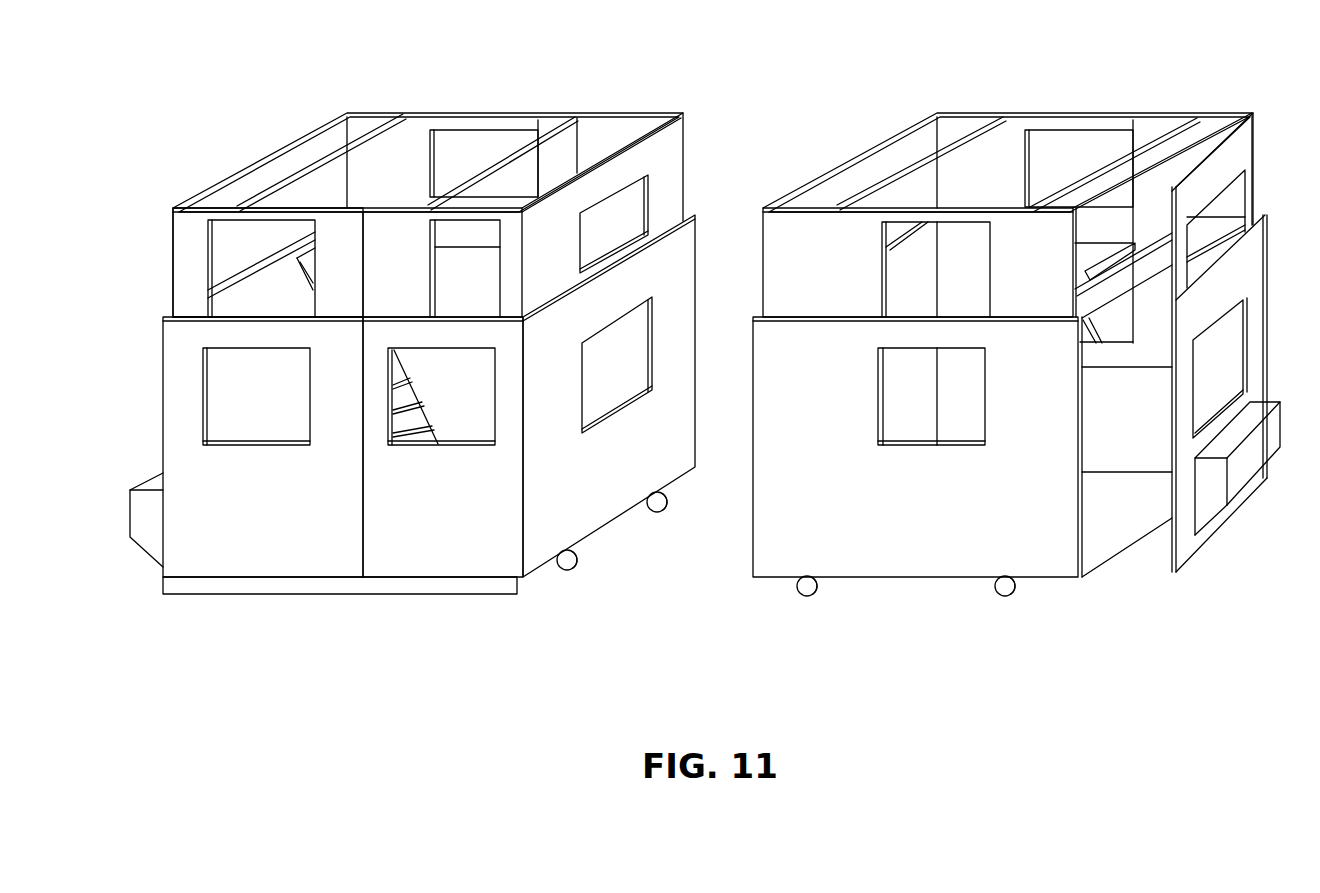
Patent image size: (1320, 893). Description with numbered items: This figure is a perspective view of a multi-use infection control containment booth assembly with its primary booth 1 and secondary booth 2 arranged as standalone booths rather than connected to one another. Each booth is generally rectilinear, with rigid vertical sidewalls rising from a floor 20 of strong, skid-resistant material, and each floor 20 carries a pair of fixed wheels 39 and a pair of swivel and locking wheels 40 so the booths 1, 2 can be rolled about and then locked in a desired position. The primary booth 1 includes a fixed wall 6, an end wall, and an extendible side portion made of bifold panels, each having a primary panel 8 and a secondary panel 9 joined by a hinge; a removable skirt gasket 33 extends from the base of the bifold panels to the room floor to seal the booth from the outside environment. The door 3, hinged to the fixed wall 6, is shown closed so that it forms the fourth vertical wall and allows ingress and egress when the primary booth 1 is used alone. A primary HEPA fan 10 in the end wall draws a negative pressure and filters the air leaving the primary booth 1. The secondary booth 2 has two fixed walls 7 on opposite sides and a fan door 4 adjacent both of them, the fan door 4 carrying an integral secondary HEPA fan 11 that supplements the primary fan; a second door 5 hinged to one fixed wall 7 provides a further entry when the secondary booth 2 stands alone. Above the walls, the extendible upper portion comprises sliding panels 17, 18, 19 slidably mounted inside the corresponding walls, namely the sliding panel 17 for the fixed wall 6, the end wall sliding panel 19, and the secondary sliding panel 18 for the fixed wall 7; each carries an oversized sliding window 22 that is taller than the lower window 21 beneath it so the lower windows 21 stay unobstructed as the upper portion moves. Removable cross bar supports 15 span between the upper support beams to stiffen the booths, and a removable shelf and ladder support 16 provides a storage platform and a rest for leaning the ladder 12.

The primary booth 1 is at (457, 607).
The secondary booth 2 is at (943, 595).
The door 3 is at (581, 483).
The fan door 4 is at (1243, 282).
The second door 5 is at (921, 305).
The fixed wall 6 is at (471, 400).
The fixed wall 7 is at (948, 500).
The primary panel 8 is at (463, 528).
The secondary panel 9 is at (272, 528).
The primary HEPA fan 10 is at (147, 557).
The secondary HEPA fan 11 is at (1256, 460).
The ladder 12 is at (308, 253).
The cross bar support 15 is at (368, 128).
The removable shelf and ladder support 16 is at (227, 300).
The sliding panel 17 is at (591, 165).
The secondary sliding panel 18 is at (996, 188).
The end wall sliding panel 19 is at (248, 255).
The floor 20 is at (1132, 515).
The lower window 21 is at (240, 400).
The sliding window 22 is at (467, 147).
The skirt gasket 33 is at (308, 594).
The fixed wheel 39 is at (810, 598).
The swivel and locking wheel 40 is at (672, 513).